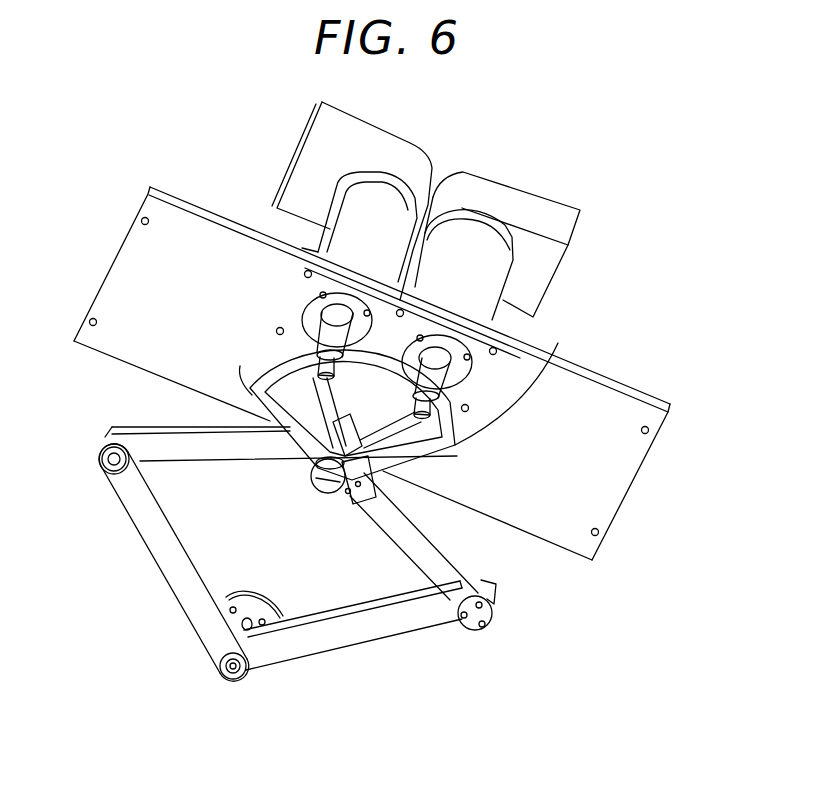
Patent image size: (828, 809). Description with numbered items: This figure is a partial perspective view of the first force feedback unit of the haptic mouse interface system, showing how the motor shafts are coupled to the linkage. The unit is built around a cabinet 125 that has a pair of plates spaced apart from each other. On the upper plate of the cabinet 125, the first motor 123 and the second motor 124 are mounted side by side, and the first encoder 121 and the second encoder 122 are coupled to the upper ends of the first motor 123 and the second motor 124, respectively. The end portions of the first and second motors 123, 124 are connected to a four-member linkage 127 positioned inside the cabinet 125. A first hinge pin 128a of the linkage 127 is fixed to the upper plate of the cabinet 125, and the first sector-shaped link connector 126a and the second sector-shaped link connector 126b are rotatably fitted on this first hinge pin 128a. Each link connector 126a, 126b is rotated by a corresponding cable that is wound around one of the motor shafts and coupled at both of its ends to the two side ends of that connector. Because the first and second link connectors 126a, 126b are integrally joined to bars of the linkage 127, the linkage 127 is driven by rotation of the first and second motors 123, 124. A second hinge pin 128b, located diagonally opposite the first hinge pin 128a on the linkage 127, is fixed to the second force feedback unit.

The first encoder 121 is at (543, 207).
The second encoder 122 is at (335, 135).
The first motor 123 is at (498, 278).
The second motor 124 is at (357, 218).
The cabinet 125 is at (603, 507).
The first sector-shaped link connector 126a is at (545, 357).
The second sector-shaped link connector 126b is at (265, 371).
The four-member linkage 127 is at (430, 549).
The first hinge pin 128a is at (316, 495).
The second hinge pin 128b is at (258, 630).